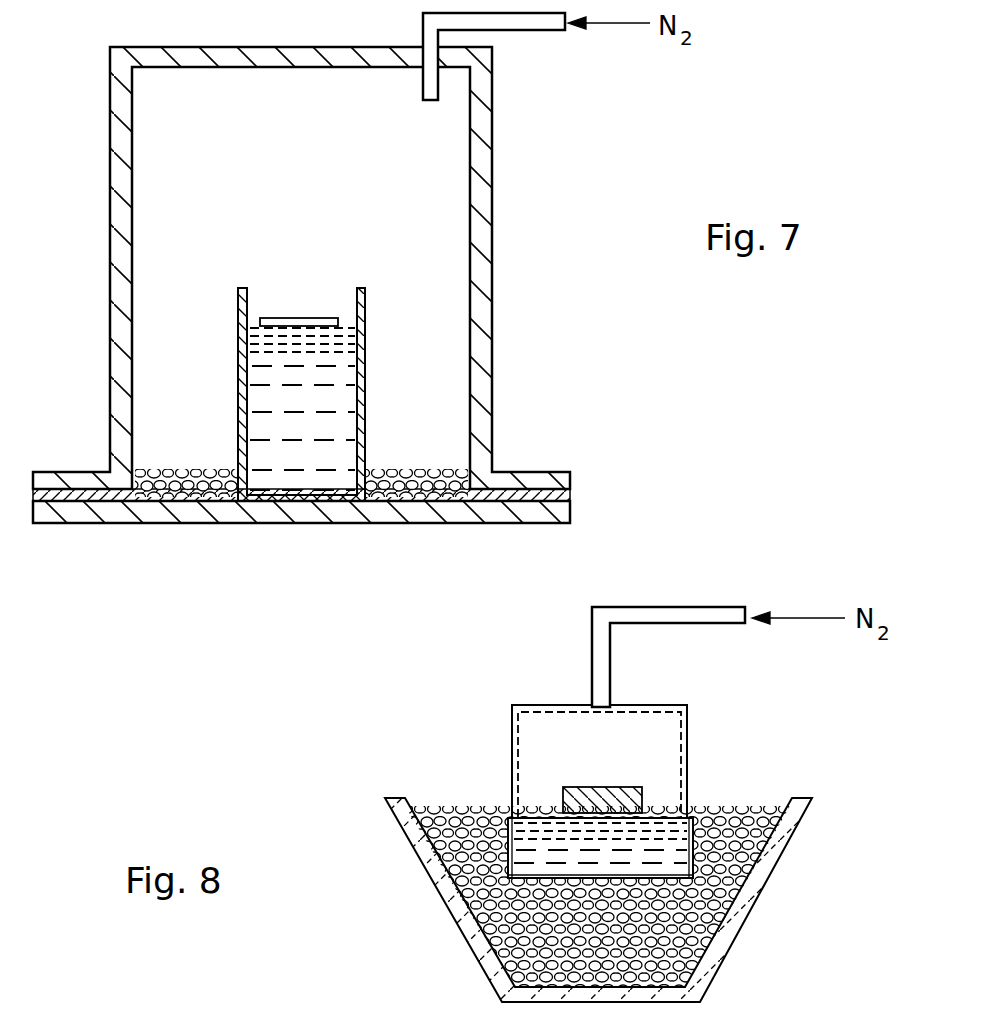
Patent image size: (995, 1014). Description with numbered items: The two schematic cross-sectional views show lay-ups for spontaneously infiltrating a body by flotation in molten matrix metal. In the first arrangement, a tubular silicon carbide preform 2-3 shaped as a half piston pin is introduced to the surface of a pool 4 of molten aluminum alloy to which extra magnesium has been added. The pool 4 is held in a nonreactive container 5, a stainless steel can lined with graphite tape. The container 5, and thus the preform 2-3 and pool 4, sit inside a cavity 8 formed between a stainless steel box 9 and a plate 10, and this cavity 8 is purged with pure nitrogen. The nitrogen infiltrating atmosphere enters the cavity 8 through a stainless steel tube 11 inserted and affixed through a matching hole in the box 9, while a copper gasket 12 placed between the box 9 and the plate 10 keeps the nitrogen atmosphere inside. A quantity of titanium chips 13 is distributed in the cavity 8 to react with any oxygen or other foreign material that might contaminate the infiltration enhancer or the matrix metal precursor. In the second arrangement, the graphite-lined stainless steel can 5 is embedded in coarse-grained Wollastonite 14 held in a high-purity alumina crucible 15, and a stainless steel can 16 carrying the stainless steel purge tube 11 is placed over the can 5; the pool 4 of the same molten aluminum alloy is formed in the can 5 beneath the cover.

In FIG. 7, the preform 2-3 is at (293, 318).
In FIG. 7, the pool 4 is at (258, 363).
In FIG. 8, the pool 4 is at (557, 833).
In FIG. 7, the nonreactive container 5 is at (367, 353).
In FIG. 8, the nonreactive container 5 is at (705, 818).
In FIG. 7, the cavity 8 is at (283, 150).
In FIG. 7, the stainless steel box 9 is at (485, 160).
In FIG. 7, the plate 10 is at (567, 522).
In FIG. 7, the stainless steel tube 11 is at (542, 32).
In FIG. 8, the stainless steel tube 11 is at (681, 613).
In FIG. 7, the copper gasket 12 is at (87, 490).
In FIG. 7, the titanium chips 13 is at (183, 487).
In FIG. 8, the coarse-grained Wollastonite 14 is at (480, 913).
In FIG. 8, the alumina crucible 15 is at (753, 890).
In FIG. 8, the stainless steel can 16 is at (512, 730).